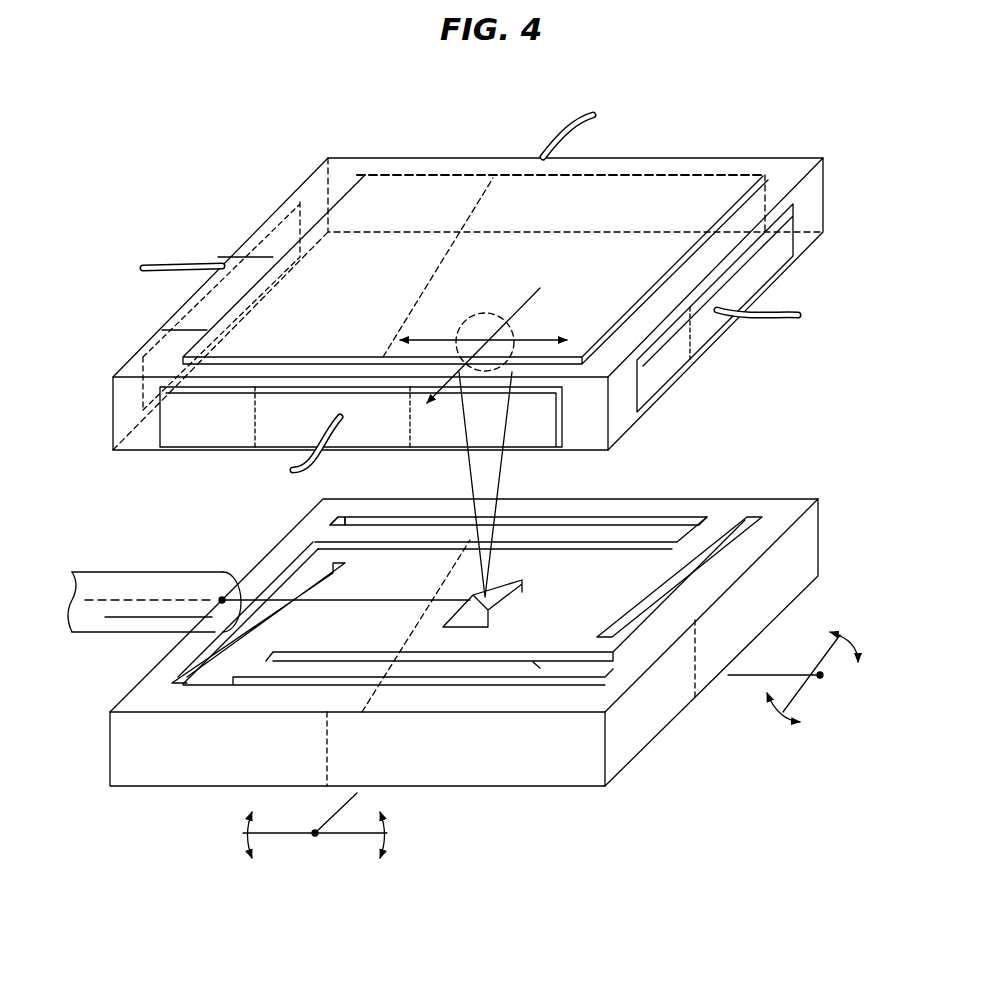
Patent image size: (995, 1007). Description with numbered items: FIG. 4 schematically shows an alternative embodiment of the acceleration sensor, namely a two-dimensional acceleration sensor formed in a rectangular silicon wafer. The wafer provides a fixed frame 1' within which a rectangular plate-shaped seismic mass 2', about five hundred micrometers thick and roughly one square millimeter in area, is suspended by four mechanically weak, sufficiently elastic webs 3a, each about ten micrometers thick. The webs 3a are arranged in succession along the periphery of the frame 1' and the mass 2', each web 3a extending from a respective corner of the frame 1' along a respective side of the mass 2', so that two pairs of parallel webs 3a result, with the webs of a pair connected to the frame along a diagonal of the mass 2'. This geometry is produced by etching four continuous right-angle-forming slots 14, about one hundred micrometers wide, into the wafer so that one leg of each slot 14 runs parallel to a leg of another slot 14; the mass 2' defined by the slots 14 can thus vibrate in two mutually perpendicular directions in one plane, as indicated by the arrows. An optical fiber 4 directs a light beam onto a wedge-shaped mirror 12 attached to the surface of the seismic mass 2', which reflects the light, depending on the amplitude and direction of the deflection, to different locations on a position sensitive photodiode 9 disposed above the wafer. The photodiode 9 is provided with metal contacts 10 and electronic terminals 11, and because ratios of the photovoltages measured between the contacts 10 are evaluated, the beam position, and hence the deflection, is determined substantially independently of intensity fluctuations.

The position sensitive photodiode 9 is at (806, 215).
The metal contacts 10 is at (653, 257).
The electronic terminals 11 is at (212, 266).
The wedge-shaped mirror 12 is at (513, 603).
The right angle forming slots 14 is at (350, 517).
The webs 3a is at (600, 533).
The seismic mass 2' is at (522, 601).
The frame 1' is at (464, 642).
The optical fiber 4 is at (113, 627).